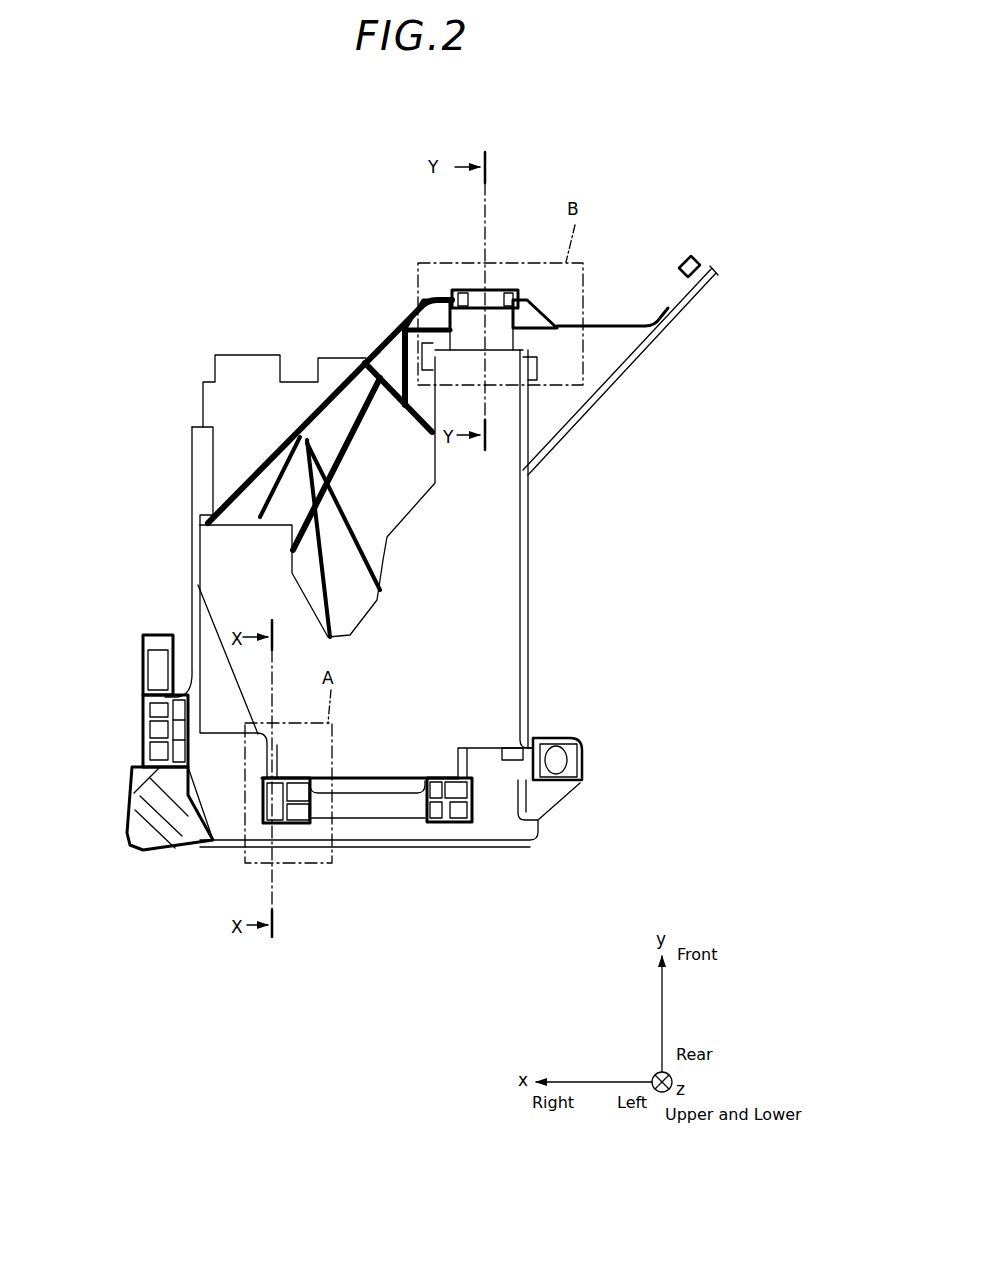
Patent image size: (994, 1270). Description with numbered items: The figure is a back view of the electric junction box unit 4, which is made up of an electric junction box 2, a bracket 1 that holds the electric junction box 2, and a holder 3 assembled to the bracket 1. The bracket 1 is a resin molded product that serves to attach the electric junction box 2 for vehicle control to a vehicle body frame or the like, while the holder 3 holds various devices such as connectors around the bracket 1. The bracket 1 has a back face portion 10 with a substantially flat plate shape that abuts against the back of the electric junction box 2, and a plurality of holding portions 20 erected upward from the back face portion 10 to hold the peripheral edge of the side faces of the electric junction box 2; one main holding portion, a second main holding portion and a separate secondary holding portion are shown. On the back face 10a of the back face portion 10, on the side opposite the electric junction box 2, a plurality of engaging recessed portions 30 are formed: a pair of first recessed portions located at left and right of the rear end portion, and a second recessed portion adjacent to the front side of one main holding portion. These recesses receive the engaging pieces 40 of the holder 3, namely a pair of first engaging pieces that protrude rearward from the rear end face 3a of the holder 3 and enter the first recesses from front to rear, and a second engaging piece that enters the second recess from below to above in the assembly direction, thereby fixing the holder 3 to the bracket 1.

The bracket 1 is at (342, 432).
The electric junction box 2 is at (195, 388).
The holder 3 is at (525, 523).
The rear end face 3a is at (363, 790).
The electric junction box unit 4 is at (293, 237).
The back face portion 10 is at (287, 500).
The back face 10a is at (297, 478).
The holding portions 20 is at (505, 287).
The engaging recessed portions 30 is at (453, 295).
The engaging pieces 40 is at (515, 319).